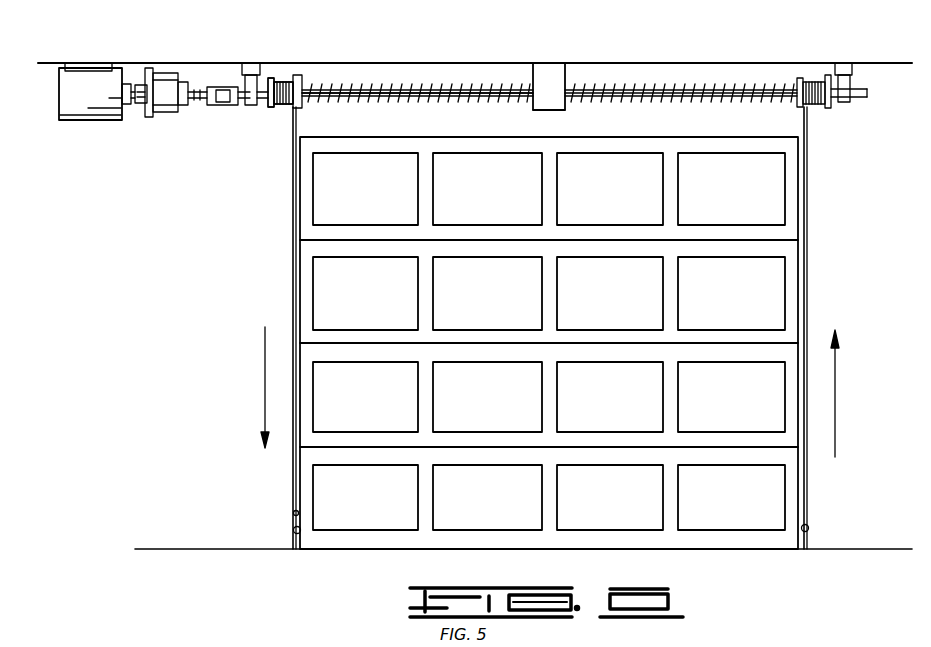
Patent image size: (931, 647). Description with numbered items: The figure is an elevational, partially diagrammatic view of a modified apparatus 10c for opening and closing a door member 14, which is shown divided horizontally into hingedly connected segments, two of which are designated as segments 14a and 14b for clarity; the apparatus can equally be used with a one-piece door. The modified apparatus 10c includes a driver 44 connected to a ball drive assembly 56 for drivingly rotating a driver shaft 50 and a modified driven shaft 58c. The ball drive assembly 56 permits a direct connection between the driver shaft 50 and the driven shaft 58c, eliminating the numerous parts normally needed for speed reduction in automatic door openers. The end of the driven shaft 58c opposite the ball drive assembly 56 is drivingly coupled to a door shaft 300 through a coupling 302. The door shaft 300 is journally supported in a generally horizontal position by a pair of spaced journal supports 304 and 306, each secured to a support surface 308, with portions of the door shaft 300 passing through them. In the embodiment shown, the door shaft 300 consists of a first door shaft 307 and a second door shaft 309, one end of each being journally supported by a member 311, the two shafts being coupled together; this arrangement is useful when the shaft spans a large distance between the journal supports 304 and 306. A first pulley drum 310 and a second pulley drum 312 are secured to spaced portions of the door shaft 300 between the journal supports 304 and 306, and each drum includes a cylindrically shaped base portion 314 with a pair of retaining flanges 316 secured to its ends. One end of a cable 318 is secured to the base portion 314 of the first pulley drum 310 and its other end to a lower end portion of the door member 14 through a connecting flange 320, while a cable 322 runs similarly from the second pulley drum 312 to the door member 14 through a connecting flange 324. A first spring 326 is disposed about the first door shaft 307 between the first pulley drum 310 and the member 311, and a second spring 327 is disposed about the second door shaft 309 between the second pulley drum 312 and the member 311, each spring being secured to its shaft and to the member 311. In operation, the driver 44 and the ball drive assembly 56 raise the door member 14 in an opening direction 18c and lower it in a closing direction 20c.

The modified apparatus 10c is at (232, 156).
The door member 14 is at (579, 343).
The door member segment 14a is at (792, 172).
The door member segment 14b is at (792, 298).
The opening direction 18c is at (828, 387).
The closing direction 20c is at (265, 382).
The driver 44 is at (75, 107).
The driver shaft 50 is at (134, 105).
The ball drive assembly 56 is at (167, 108).
The driven shaft 58c is at (197, 100).
The door shaft 300 is at (398, 88).
The coupling 302 is at (217, 87).
The journal support 304 is at (255, 64).
The journal support 306 is at (848, 88).
The first door shaft 307 is at (460, 88).
The support surface 308 is at (515, 72).
The second door shaft 309 is at (718, 90).
The first pulley drum 310 is at (283, 80).
The member 311 is at (548, 110).
The second pulley drum 312 is at (815, 75).
The base portion 314 is at (284, 105).
The retaining flange 316 is at (271, 80).
The cable 318 is at (293, 216).
The connecting flange 320 is at (293, 531).
The cable 322 is at (807, 260).
The connecting flange 324 is at (810, 527).
The first spring 326 is at (432, 98).
The second spring 327 is at (625, 98).